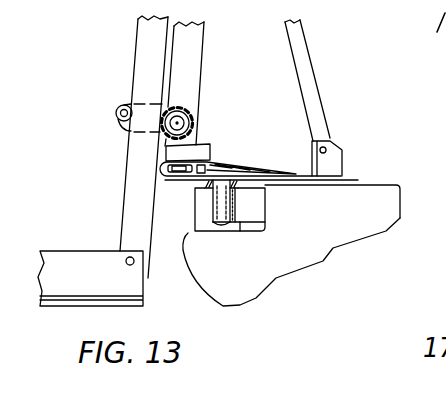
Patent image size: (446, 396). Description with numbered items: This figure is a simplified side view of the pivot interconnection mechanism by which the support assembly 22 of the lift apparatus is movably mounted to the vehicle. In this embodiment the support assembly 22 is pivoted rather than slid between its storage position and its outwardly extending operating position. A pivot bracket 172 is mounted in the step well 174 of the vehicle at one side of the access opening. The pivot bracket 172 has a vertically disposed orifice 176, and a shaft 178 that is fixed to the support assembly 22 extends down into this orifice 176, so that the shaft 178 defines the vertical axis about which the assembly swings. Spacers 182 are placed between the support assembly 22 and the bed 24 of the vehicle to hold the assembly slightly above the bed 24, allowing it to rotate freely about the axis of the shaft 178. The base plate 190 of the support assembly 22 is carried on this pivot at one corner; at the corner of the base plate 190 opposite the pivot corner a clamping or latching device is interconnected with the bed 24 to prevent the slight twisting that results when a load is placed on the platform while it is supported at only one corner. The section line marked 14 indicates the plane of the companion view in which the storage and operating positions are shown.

The section line 14- 14 is at (123, 146).
The support assembly 22 is at (206, 62).
The bed 24 is at (356, 185).
The pivot bracket 172 is at (257, 203).
The step well 174 is at (188, 233).
The vertically disposed orifice 176 is at (262, 216).
The shaft 178 is at (212, 197).
The spacers 182 is at (247, 166).
The base plate 190 is at (307, 176).